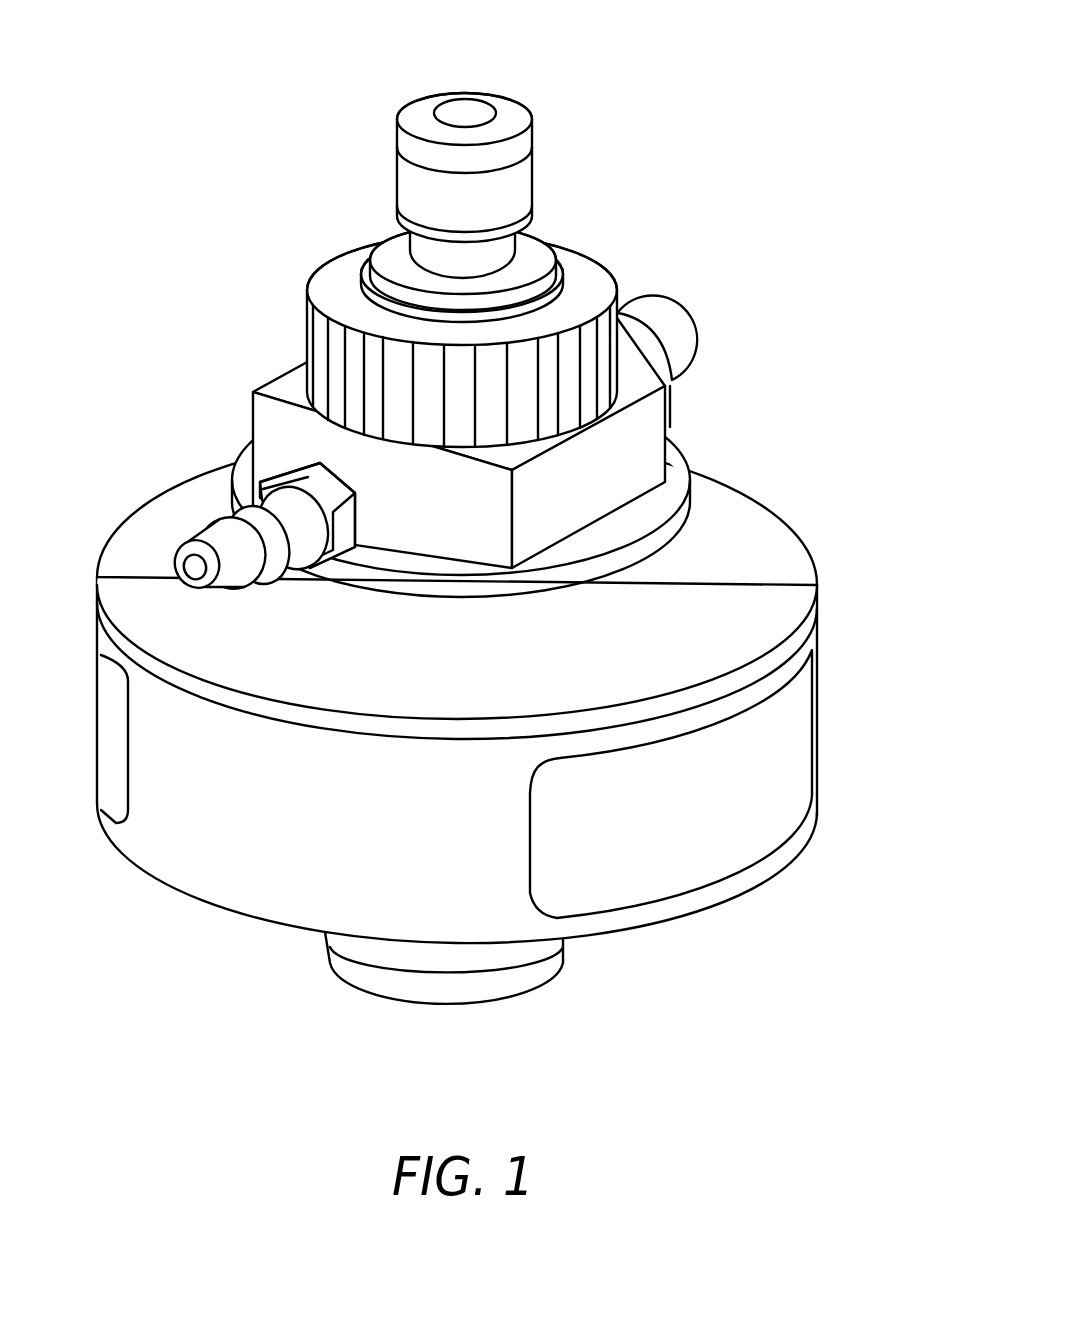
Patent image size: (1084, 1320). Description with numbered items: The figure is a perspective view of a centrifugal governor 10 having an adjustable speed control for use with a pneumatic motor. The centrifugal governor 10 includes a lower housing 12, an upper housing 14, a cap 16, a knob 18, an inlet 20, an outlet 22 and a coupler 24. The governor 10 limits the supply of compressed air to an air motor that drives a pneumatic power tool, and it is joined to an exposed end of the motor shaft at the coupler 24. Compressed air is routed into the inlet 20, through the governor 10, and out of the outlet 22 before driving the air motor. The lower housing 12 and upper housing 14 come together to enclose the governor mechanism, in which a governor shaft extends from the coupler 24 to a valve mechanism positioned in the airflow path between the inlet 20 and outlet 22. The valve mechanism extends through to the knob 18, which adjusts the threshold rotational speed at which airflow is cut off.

The centrifugal governor 10 is at (477, 543).
The lower housing 12 is at (238, 900).
The upper housing 14 is at (758, 518).
The cap 16 is at (488, 340).
The knob 18 is at (507, 115).
The inlet 20 is at (177, 555).
The outlet 22 is at (693, 345).
The coupler 24 is at (442, 995).